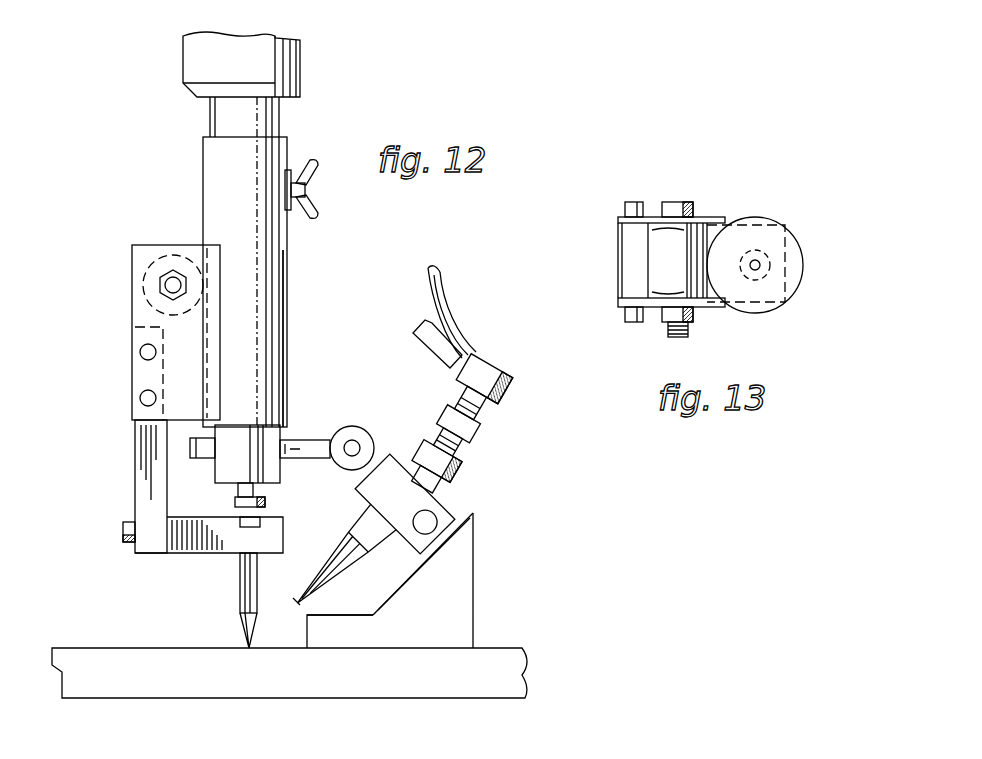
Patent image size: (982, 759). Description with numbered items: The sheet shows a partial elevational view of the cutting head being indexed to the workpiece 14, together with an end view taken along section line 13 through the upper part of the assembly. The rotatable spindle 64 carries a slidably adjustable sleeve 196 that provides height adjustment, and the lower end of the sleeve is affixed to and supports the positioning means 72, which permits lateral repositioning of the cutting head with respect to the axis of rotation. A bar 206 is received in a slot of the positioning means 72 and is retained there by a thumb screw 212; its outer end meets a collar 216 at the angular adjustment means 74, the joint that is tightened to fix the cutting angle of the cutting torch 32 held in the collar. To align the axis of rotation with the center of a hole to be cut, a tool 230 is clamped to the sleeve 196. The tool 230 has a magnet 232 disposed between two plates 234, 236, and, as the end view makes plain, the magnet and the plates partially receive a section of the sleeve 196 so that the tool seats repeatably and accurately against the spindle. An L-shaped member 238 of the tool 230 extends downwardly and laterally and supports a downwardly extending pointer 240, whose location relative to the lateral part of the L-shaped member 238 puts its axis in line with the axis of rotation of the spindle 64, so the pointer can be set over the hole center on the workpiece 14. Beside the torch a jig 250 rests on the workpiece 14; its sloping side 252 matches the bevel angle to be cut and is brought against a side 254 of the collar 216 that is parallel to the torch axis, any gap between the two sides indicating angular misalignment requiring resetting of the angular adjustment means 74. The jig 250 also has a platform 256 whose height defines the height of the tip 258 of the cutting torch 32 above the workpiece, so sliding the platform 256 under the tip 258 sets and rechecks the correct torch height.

In FIG. 12, the section line 13 is at (140, 219).
In FIG. 12, the workpiece surface 14 is at (127, 650).
In FIG. 12, the cutting torch 32 is at (345, 525).
In FIG. 12, the rotatable spindle 64 is at (290, 288).
In FIG. 12, the positioning means 72 is at (222, 463).
In FIG. 12, the angular adjustment means 74 is at (350, 425).
In FIG. 12, the slidably adjustable sleeve 196 is at (202, 147).
In FIG. 13, the slidably adjustable sleeve 196 is at (763, 216).
In FIG. 12, the bar 206 is at (305, 440).
In FIG. 12, the thumb screw 212 is at (235, 499).
In FIG. 12, the collar 216 is at (437, 500).
In FIG. 12, the tool 230 is at (134, 263).
In FIG. 13, the tool 230 is at (618, 258).
In FIG. 13, the magnet 232 is at (662, 238).
In FIG. 13, the plate 234 is at (700, 217).
In FIG. 13, the plate 236 is at (713, 309).
In FIG. 12, the L-shaped member 238 is at (135, 456).
In FIG. 12, the pointer 240 is at (240, 577).
In FIG. 12, the jig 250 is at (455, 613).
In FIG. 12, the sloping side 252 is at (417, 562).
In FIG. 12, the side of collar 254 is at (450, 514).
In FIG. 12, the platform 256 is at (333, 614).
In FIG. 12, the tip 258 is at (290, 601).